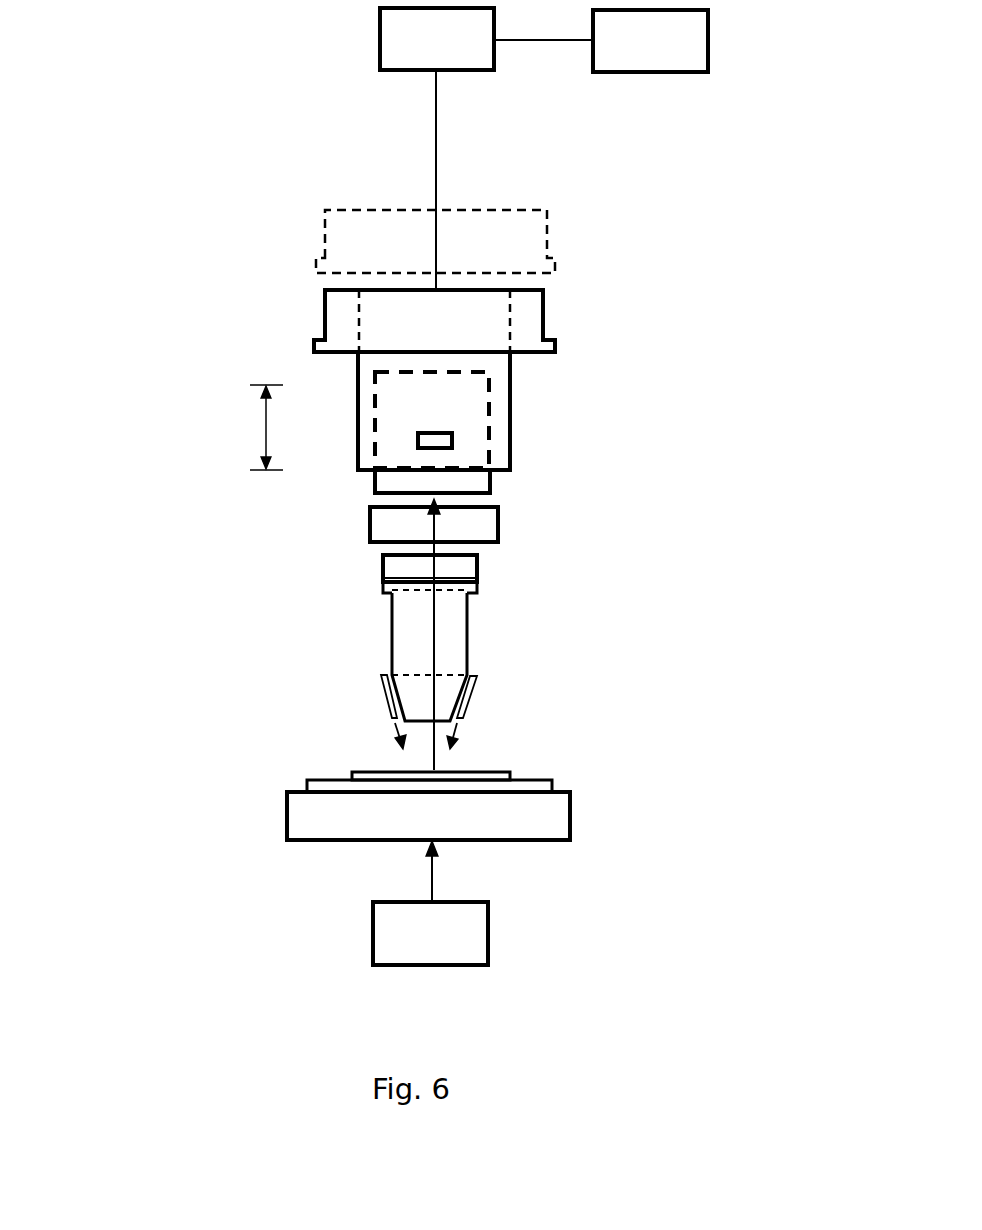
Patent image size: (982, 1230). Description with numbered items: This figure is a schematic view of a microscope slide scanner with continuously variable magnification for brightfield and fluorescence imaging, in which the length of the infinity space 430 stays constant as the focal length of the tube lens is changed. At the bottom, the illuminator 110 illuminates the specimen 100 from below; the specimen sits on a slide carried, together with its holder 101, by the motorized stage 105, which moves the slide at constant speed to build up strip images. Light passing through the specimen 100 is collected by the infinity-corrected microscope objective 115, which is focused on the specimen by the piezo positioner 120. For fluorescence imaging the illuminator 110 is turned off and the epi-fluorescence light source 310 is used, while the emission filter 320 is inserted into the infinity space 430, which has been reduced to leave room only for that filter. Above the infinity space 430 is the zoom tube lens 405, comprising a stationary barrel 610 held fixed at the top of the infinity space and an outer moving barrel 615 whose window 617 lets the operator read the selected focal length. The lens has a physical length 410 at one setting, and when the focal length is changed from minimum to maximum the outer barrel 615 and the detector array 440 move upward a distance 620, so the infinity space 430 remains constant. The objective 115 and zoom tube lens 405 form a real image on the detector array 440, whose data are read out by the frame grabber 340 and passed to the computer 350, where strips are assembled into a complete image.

The frame grabber 340 is at (380, 40).
The computer 350 is at (708, 40).
The detector array 440 is at (547, 238).
The length 410 is at (515, 500).
The outer moving barrel 615 is at (358, 408).
The window 617 is at (452, 440).
The zoom tube lens 405 is at (490, 487).
The distance 620 is at (262, 429).
The stationary barrel 610 is at (375, 437).
The infinity space 430 is at (335, 498).
The emission filter 320 is at (498, 525).
The piezo positioner 120 is at (478, 565).
The infinity-corrected microscope objective 115 is at (470, 633).
The epi-fluorescence light source 310 is at (472, 703).
The specimen 100 is at (510, 775).
The sample holder 101 is at (552, 785).
The motorized stage 105 is at (570, 818).
The illuminator 110 is at (488, 940).